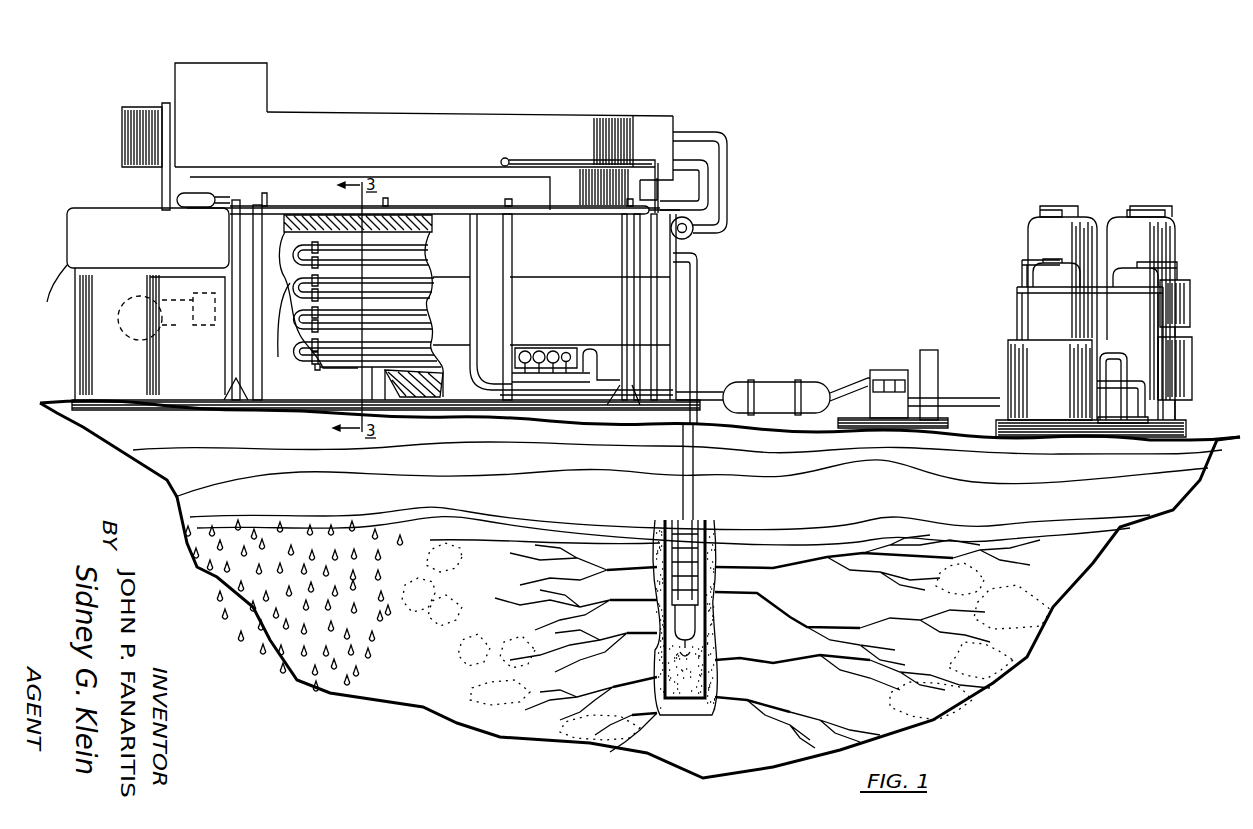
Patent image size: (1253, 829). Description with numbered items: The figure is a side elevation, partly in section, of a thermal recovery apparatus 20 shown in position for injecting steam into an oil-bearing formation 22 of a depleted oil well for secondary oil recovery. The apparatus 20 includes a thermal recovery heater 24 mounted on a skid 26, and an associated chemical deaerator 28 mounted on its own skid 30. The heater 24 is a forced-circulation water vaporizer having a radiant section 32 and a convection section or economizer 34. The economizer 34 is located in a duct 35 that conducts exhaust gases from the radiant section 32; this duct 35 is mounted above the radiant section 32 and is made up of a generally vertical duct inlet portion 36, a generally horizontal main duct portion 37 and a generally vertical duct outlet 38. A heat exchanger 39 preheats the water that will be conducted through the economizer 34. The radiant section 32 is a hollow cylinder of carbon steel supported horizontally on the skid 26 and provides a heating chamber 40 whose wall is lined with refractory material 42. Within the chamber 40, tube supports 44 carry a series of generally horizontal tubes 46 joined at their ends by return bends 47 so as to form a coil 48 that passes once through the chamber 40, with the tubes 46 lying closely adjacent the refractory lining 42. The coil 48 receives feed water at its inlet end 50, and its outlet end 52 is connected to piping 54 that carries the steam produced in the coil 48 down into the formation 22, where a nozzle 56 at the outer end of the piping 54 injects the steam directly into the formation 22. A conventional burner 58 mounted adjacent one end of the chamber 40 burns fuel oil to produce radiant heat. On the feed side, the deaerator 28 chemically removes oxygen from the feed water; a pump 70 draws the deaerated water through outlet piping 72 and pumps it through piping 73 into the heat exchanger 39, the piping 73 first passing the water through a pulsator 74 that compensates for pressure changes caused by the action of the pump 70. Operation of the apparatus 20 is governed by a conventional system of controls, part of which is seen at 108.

The thermal recovery apparatus 20 is at (938, 146).
The oil-bearing formation 22 is at (640, 589).
The thermal recovery heater 24 is at (757, 122).
The skid 26 is at (73, 397).
The chemical deaerator 28 is at (1104, 198).
The skid 30 is at (1197, 432).
The radiant section 32 is at (450, 302).
The economizer 34 is at (397, 156).
The duct 35 is at (640, 126).
The duct inlet portion 36 is at (566, 190).
The main duct portion 37 is at (417, 114).
The duct outlet 38 is at (253, 90).
The heat exchanger 39 is at (243, 194).
The heating chamber 40 is at (340, 222).
The refractory lining 42 is at (372, 280).
The tube supports 44 is at (306, 235).
The tubes 46 is at (380, 315).
The return bends 47 is at (266, 328).
The coil 48 is at (288, 240).
The inlet end 50 is at (702, 246).
The outlet end 52 is at (707, 276).
The piping 54 is at (683, 462).
The nozzle 56 is at (712, 635).
The burner 58 is at (134, 290).
The pump 70 is at (882, 370).
The outlet piping 72 is at (953, 398).
The piping 73 is at (702, 392).
The pulsator 74 is at (772, 392).
The controls 108 is at (551, 342).